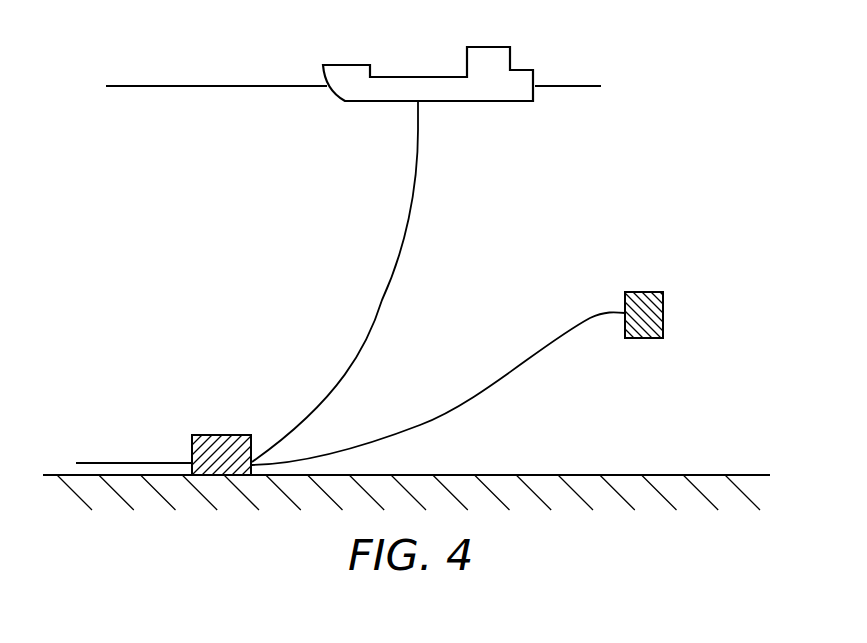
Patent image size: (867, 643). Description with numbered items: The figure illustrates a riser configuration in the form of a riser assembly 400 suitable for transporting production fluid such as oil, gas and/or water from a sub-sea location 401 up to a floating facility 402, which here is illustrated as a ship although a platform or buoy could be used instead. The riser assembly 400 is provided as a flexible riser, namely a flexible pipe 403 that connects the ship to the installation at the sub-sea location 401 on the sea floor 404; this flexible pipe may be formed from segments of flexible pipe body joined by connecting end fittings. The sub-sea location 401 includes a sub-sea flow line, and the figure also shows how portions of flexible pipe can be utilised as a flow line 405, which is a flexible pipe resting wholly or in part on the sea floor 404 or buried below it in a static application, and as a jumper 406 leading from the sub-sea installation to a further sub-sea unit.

The riser assembly 400 is at (594, 175).
The sub-sea location 401 is at (218, 435).
The floating facility 402 is at (343, 63).
The flexible pipe 403 is at (380, 302).
The sea floor 404 is at (722, 474).
The flow line 405 is at (118, 463).
The jumper 406 is at (553, 337).